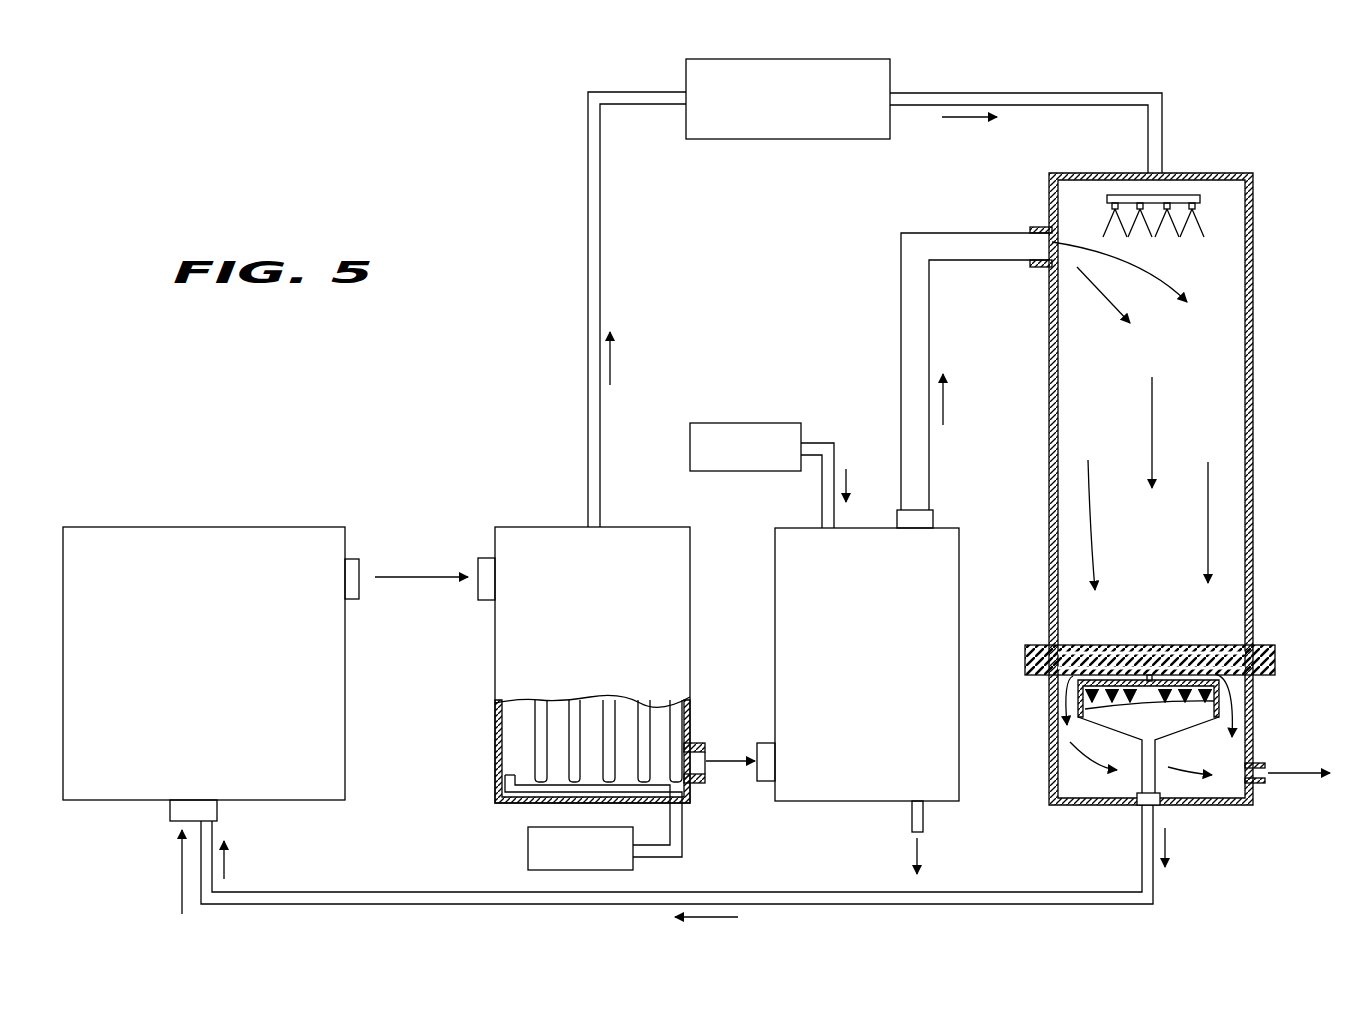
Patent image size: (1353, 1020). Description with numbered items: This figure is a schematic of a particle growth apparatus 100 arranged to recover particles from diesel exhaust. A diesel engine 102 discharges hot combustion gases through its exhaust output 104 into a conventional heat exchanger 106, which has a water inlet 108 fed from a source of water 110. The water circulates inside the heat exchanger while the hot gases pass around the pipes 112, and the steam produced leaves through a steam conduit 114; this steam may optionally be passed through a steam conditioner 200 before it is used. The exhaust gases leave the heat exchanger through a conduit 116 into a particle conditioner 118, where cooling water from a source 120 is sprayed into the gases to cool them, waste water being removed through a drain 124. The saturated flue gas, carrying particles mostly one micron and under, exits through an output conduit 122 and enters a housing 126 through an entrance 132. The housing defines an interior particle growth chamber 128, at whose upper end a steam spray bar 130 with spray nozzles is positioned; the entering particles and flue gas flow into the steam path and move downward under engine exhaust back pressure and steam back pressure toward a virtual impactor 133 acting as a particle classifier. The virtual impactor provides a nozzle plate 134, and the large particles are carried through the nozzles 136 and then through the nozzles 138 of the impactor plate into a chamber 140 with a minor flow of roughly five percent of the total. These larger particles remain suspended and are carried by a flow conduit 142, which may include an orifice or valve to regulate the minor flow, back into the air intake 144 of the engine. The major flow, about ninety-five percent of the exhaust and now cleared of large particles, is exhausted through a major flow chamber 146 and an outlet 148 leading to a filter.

The particle growth apparatus 100 is at (555, 435).
The diesel engine 102 is at (197, 527).
The exhaust output 104 is at (358, 602).
The heat exchanger 106 is at (525, 527).
The water inlet 108 is at (680, 812).
The source of water 110 is at (528, 853).
The pipes 112 is at (525, 758).
The steam conduit 114 is at (600, 300).
The conduit 116 is at (690, 745).
The particle conditioner 118 is at (959, 801).
The source of cooling water 120 is at (783, 423).
The output conduit 122 is at (932, 333).
The drain 124 is at (912, 822).
The housing 126 is at (1253, 327).
The particle growth chamber 128 is at (1163, 281).
The steam spray bar 130 is at (1200, 199).
The entrance 132 is at (1043, 225).
The virtual impactor 133 is at (1100, 643).
The nozzle plate 134 is at (1220, 682).
The nozzles 136 is at (1243, 633).
The nozzles 138 is at (1203, 705).
The chamber 140 is at (1078, 710).
The flow conduit 142 is at (1100, 900).
The air intake 144 is at (170, 815).
The major flow chamber 146 is at (1235, 757).
The outlet 148 is at (1262, 786).
The steam conditioner 200 is at (686, 68).